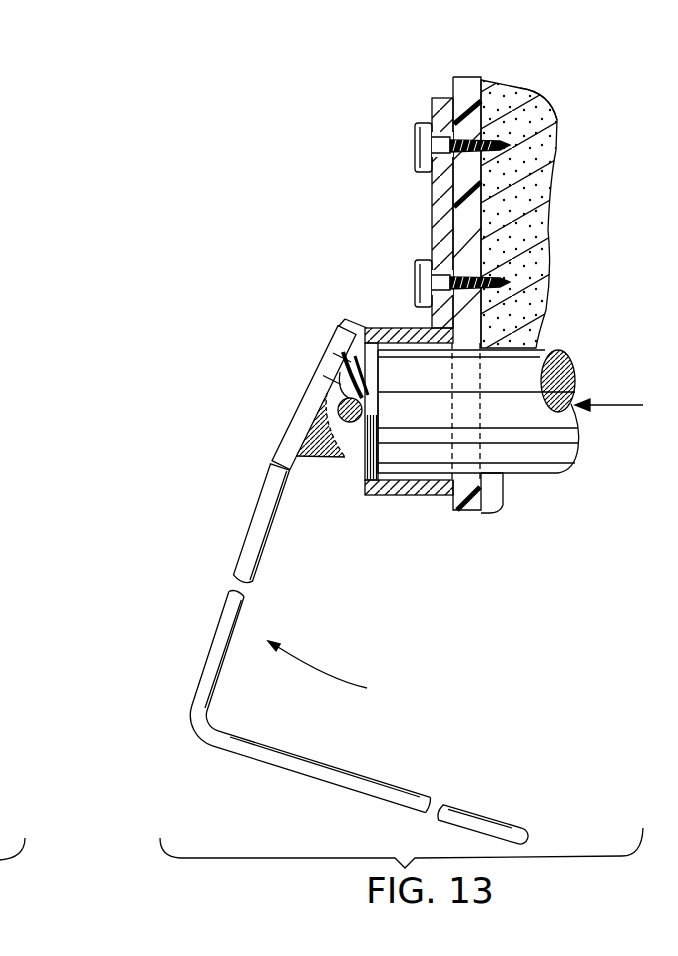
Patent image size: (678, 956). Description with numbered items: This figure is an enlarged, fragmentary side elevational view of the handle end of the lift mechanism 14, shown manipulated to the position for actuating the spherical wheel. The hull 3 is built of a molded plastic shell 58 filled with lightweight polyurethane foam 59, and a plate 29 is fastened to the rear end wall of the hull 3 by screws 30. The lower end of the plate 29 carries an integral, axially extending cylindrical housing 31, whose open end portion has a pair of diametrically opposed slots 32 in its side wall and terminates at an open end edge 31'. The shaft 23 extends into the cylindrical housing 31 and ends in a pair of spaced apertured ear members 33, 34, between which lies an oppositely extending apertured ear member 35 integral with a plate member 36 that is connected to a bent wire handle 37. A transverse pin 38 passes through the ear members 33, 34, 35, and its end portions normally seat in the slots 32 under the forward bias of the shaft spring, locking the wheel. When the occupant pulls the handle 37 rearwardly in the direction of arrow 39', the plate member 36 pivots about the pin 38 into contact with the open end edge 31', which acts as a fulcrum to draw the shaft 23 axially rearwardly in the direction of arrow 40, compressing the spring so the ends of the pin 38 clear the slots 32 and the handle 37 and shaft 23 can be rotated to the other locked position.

The hull 3 is at (535, 227).
The lift mechanism 14 is at (229, 546).
The shaft 23 is at (546, 471).
The plate 29 is at (432, 210).
The screws 30 is at (416, 145).
The cylindrical housing 31 is at (396, 391).
The open end edge 31' is at (338, 318).
The slots 32 is at (385, 407).
The apertured ear member 33 is at (336, 462).
The apertured ear member 34 is at (363, 462).
The apertured ear member 35 is at (303, 460).
The plate member 36 is at (333, 380).
The bent wire handle 37 is at (193, 692).
The pin 38 is at (364, 396).
The arrow 39' is at (317, 659).
The arrow 40 is at (606, 405).
The molded shell 58 is at (471, 86).
The polyurethane foam 59 is at (543, 108).